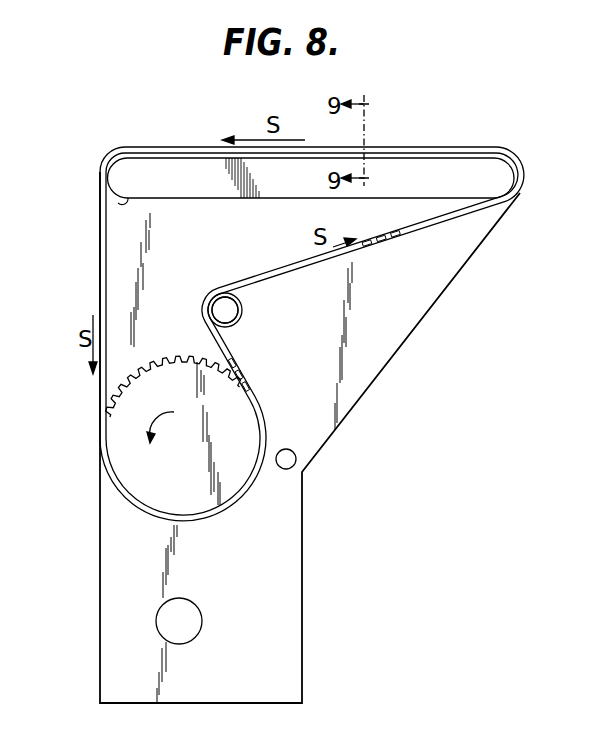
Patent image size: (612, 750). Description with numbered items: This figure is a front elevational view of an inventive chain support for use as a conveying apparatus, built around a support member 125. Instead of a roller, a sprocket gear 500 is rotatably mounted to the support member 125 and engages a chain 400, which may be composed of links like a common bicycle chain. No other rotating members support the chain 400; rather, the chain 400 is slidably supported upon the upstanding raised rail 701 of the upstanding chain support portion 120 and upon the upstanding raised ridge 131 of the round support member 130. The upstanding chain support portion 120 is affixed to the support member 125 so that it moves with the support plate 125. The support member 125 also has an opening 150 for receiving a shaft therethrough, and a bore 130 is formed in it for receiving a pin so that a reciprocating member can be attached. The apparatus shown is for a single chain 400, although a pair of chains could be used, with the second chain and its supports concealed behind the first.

The upstanding chain support portion 120 is at (455, 194).
The support member 125 is at (201, 251).
The round support member 130 is at (231, 308).
The upstanding raised ridge 131 is at (238, 326).
The opening 150 is at (162, 618).
The chain 400 is at (400, 149).
The sprocket gear 500 is at (178, 404).
The upstanding raised rail 701 is at (114, 196).